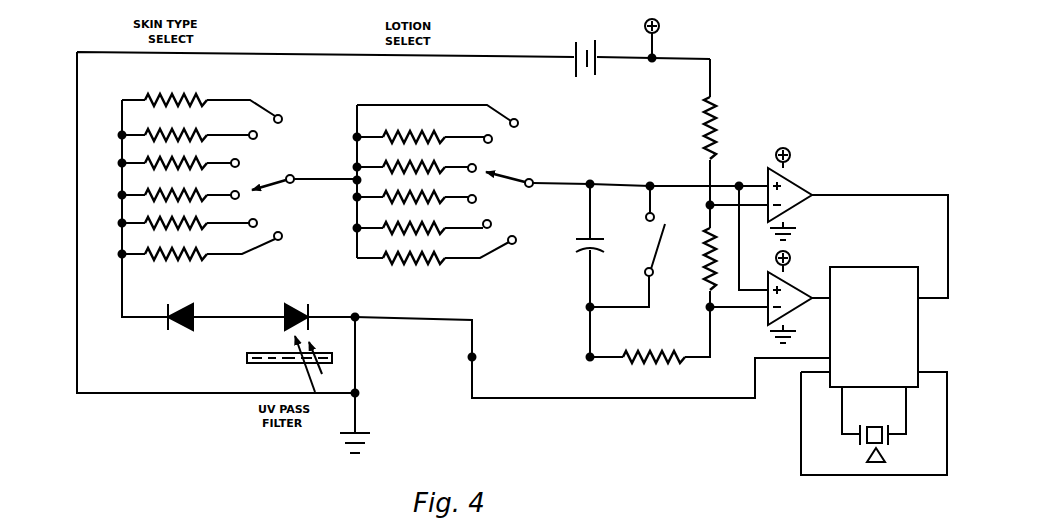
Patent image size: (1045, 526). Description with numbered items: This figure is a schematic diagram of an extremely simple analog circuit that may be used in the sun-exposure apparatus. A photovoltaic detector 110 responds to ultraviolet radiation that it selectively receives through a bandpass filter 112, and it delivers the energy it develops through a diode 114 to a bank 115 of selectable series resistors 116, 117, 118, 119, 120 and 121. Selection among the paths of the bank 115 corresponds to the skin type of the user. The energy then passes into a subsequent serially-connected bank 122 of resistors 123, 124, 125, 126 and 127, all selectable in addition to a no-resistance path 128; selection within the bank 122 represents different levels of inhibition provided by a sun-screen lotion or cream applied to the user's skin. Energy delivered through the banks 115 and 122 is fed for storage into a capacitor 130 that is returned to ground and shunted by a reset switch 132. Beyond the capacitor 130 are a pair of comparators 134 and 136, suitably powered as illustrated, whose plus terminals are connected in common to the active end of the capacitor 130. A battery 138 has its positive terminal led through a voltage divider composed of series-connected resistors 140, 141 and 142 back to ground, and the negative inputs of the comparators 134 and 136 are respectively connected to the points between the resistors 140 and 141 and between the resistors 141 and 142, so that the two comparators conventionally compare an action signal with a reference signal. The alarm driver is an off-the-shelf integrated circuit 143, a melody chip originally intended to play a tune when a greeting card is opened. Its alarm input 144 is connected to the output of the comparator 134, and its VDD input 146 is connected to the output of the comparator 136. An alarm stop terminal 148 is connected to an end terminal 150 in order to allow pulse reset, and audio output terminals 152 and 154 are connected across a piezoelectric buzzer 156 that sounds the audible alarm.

The photovoltaic detector 110 is at (310, 334).
The bandpass filter 112 is at (258, 367).
The diode 114 is at (178, 330).
The bank of selectable series resistors 115 is at (112, 153).
The resistor 116 is at (200, 100).
The resistor 117 is at (160, 130).
The resistor 118 is at (195, 148).
The resistor 119 is at (190, 201).
The resistor 120 is at (200, 226).
The resistor 121 is at (195, 262).
The serially-connected bank of resistors 122 is at (350, 160).
The resistor 123 is at (428, 133).
The resistor 124 is at (440, 166).
The resistor 125 is at (425, 198).
The resistor 126 is at (425, 229).
The resistor 127 is at (412, 262).
The no-resistance path 128 is at (404, 104).
The capacitor 130 is at (580, 252).
The reset switch 132 is at (654, 258).
The comparator 134 is at (800, 180).
The comparator 136 is at (800, 284).
The battery 138 is at (572, 72).
The resistor 140 is at (718, 127).
The resistor 141 is at (707, 230).
The resistor 142 is at (660, 366).
The integrated circuit 143 is at (875, 267).
The alarm input 144 is at (920, 303).
The VDD input 146 is at (820, 302).
The alarm stop terminal 148 is at (822, 375).
The end terminal 150 is at (918, 372).
The audio output terminal 152 is at (906, 396).
The audio output terminal 154 is at (843, 390).
The piezoelectric buzzer 156 is at (876, 466).